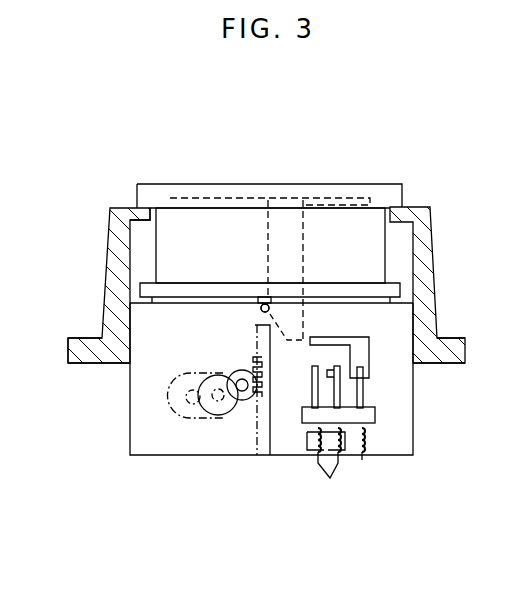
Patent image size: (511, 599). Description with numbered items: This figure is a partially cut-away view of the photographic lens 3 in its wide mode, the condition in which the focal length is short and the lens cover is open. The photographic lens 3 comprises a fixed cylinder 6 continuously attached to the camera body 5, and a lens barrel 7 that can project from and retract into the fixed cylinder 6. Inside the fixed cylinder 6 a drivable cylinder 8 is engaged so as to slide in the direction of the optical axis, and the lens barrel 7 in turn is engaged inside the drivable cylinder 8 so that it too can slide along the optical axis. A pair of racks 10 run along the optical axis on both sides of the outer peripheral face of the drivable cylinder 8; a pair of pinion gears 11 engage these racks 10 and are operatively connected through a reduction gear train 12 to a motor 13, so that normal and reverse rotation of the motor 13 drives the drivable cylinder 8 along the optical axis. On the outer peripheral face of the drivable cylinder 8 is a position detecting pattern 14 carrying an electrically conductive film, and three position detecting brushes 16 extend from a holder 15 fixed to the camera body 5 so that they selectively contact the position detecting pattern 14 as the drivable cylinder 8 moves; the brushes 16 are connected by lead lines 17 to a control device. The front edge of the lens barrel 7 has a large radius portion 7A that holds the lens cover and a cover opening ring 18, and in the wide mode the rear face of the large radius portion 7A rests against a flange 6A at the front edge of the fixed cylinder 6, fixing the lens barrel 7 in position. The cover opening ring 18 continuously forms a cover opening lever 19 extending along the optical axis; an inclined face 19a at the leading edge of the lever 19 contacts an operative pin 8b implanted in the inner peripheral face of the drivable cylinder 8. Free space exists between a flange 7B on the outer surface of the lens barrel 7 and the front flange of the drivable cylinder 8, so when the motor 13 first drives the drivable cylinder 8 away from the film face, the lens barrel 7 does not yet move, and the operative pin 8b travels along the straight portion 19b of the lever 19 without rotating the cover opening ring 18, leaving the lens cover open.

The photographic lens 3 is at (447, 186).
The camera body 5 is at (88, 338).
The fixed cylinder 6 is at (108, 262).
The flange 6A is at (128, 208).
The lens barrel 7 is at (390, 242).
The large radius portion 7A is at (166, 184).
The flange 7B is at (343, 288).
The drivable cylinder 8 is at (128, 428).
The operative pin 8b is at (260, 310).
The racks 10 is at (247, 390).
The pinion gears 11 is at (243, 366).
The reduction gear train 12 is at (225, 415).
The motor 13 is at (183, 415).
The position detecting pattern 14 is at (369, 342).
The holder 15 is at (375, 415).
The position detecting brushes 16 is at (362, 397).
The lead lines 17 is at (336, 466).
The cover opening ring 18 is at (232, 198).
The cover opening lever 19 is at (278, 235).
The inclined face 19a is at (285, 354).
The straight portion 19b is at (262, 302).